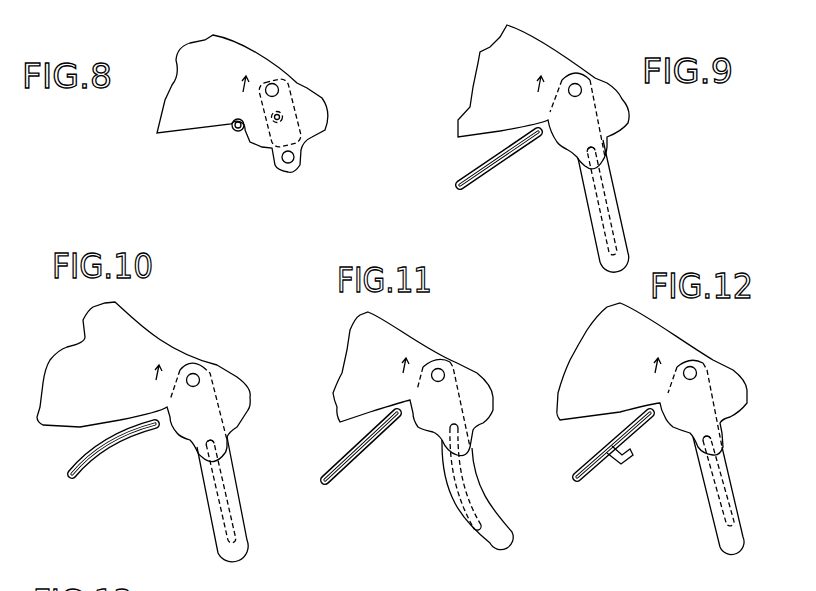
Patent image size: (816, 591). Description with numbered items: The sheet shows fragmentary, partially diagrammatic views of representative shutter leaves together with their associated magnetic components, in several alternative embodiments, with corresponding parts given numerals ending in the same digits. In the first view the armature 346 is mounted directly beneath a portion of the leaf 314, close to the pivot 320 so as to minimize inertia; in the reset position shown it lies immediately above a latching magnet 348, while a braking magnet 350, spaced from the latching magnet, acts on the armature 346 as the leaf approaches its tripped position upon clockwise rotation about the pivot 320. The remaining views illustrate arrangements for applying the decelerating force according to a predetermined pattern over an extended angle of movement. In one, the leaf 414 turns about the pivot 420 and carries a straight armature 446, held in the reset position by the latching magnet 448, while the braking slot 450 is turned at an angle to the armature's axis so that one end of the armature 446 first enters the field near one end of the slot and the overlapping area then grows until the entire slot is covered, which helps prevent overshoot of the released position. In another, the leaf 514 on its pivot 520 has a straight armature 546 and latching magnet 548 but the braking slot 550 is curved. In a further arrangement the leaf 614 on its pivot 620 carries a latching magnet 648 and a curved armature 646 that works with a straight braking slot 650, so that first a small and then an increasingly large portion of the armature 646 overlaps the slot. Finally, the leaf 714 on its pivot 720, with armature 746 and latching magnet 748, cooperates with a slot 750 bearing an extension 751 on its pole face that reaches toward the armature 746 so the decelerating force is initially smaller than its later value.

In FIG. 8, the leaf 314 is at (233, 70).
In FIG. 8, the pivot 320 is at (275, 87).
In FIG. 8, the armature 346 is at (288, 100).
In FIG. 8, the latching magnet 348 is at (281, 121).
In FIG. 8, the braking magnet 350 is at (235, 132).
In FIG. 9, the leaf 414 is at (630, 120).
In FIG. 9, the pivot 420 is at (577, 83).
In FIG. 9, the armature 446 is at (623, 213).
In FIG. 9, the latching magnet 448 is at (597, 190).
In FIG. 9, the braking slot 450 is at (467, 173).
In FIG. 10, the leaf 514 is at (250, 407).
In FIG. 10, the pivot 520 is at (195, 377).
In FIG. 10, the armature 546 is at (243, 527).
In FIG. 10, the latching magnet 548 is at (223, 490).
In FIG. 10, the braking slot 550 is at (117, 453).
In FIG. 11, the leaf 614 is at (493, 407).
In FIG. 11, the pivot 620 is at (441, 372).
In FIG. 11, the armature 646 is at (512, 532).
In FIG. 11, the latching magnet 648 is at (473, 497).
In FIG. 11, the braking slot 650 is at (368, 453).
In FIG. 12, the leaf 714 is at (740, 407).
In FIG. 12, the pivot 720 is at (693, 371).
In FIG. 12, the armature 746 is at (715, 527).
In FIG. 12, the latching magnet 748 is at (713, 483).
In FIG. 12, the slot 750 is at (583, 463).
In FIG. 12, the extension 751 is at (628, 461).